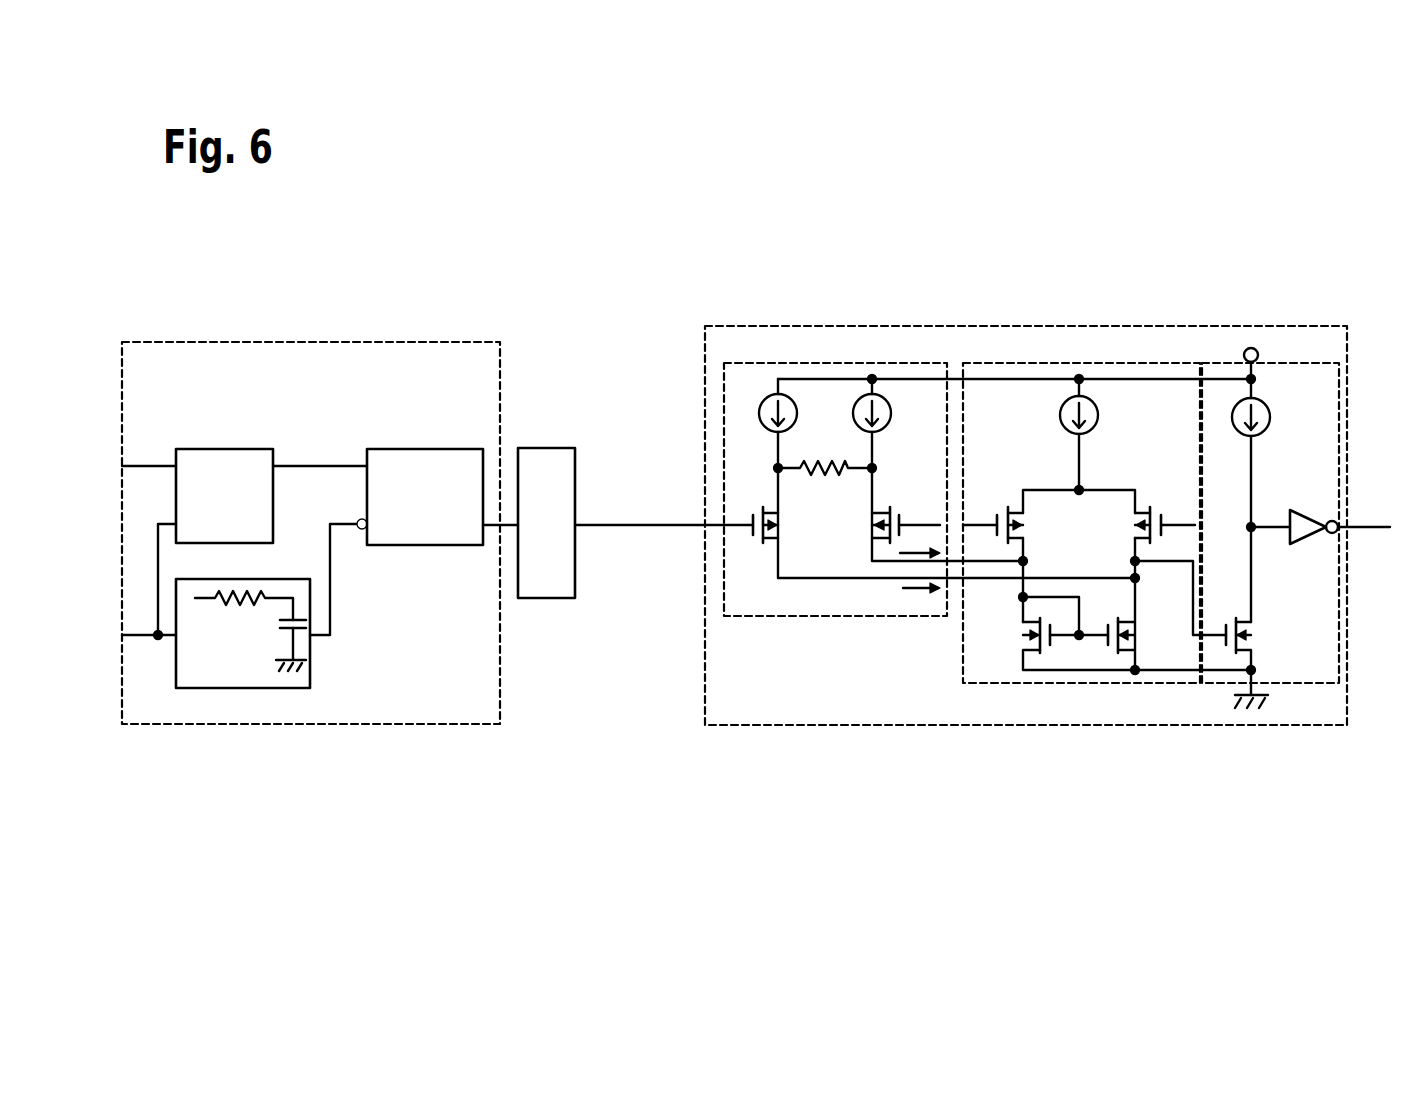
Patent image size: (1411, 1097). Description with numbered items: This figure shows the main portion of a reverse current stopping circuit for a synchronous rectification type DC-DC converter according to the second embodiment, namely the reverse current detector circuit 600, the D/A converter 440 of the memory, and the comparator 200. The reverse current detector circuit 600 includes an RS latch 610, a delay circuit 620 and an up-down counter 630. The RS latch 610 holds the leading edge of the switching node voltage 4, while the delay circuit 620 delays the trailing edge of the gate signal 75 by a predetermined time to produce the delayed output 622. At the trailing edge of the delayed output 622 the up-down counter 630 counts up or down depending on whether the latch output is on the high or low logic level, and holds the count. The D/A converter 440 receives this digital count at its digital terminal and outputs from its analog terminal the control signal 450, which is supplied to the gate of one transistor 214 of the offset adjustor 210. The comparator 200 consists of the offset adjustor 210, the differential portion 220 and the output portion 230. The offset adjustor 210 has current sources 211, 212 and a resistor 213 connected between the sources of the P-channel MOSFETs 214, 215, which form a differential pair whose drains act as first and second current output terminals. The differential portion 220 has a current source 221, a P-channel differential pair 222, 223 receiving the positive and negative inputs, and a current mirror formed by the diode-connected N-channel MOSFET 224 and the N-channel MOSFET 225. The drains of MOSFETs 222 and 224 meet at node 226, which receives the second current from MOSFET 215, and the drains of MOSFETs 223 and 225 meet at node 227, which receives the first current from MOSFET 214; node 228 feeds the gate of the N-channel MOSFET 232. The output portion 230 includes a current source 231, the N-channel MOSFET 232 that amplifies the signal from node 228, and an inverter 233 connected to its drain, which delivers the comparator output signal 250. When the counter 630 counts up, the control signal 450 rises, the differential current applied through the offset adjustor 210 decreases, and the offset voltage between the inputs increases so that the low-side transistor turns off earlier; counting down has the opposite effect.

The Vsw 4 is at (142, 466).
The Vgn 75 is at (134, 635).
The comparator 200 is at (1079, 725).
The offset adjustor 210 is at (843, 617).
The current source 211 is at (795, 401).
The current source 212 is at (887, 401).
The resistor Rs 213 is at (827, 472).
The P-channel MOSFET 214 is at (770, 536).
The P-channel MOSFET 215 is at (878, 540).
The differential portion 220 is at (1062, 363).
The current source 221 is at (1099, 408).
The P-channel MOSFET 222 is at (1029, 529).
The P-channel MOSFET 223 is at (1141, 535).
The diode-connected N-channel MOSFET 224 is at (1031, 626).
The N-channel MOSFET 225 is at (1123, 639).
The node 226 is at (1027, 561).
The node 227 is at (1137, 579).
The node 228 is at (1139, 562).
The output portion 230 is at (1274, 363).
The current source 231 is at (1264, 405).
The N-channel MOSFET 232 is at (1251, 635).
The inverter 233 is at (1315, 545).
The output signal Vo 250 is at (1360, 530).
The D/A converter 440 is at (576, 466).
The control signal Vctrl 450 is at (680, 533).
The reverse current detector circuit 600 is at (320, 342).
The RS latch 610 is at (268, 449).
The delay circuit 620 is at (300, 478).
The output Vgn' 622 is at (318, 637).
The up-down counter 630 is at (401, 545).